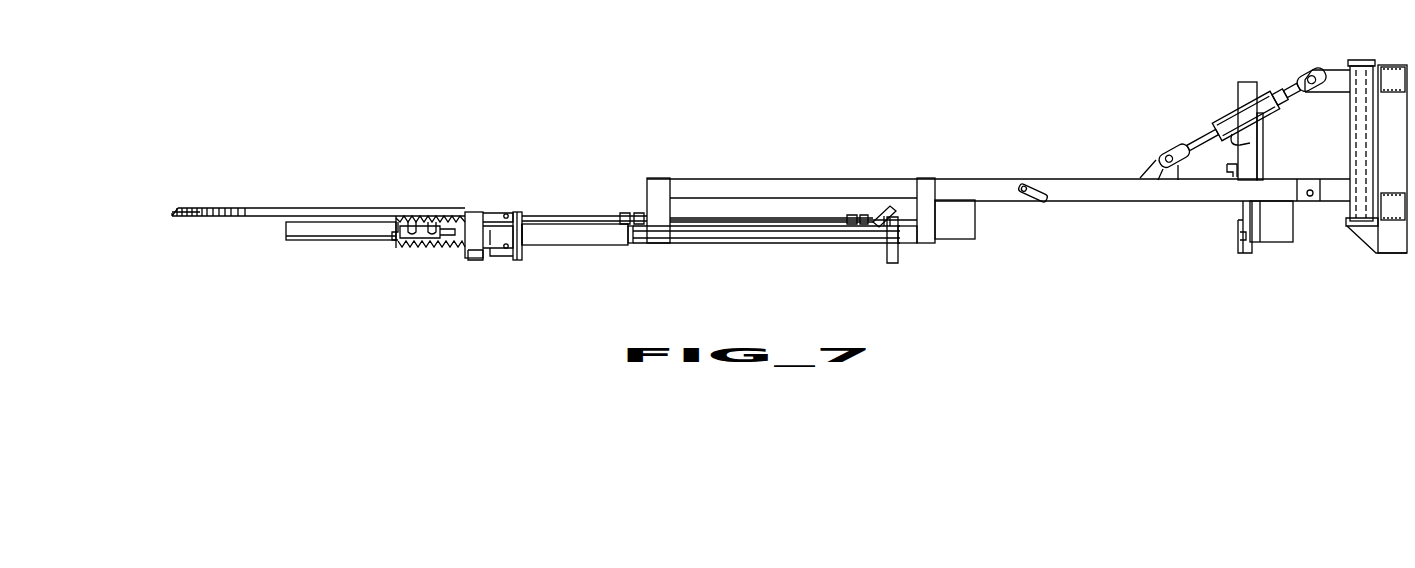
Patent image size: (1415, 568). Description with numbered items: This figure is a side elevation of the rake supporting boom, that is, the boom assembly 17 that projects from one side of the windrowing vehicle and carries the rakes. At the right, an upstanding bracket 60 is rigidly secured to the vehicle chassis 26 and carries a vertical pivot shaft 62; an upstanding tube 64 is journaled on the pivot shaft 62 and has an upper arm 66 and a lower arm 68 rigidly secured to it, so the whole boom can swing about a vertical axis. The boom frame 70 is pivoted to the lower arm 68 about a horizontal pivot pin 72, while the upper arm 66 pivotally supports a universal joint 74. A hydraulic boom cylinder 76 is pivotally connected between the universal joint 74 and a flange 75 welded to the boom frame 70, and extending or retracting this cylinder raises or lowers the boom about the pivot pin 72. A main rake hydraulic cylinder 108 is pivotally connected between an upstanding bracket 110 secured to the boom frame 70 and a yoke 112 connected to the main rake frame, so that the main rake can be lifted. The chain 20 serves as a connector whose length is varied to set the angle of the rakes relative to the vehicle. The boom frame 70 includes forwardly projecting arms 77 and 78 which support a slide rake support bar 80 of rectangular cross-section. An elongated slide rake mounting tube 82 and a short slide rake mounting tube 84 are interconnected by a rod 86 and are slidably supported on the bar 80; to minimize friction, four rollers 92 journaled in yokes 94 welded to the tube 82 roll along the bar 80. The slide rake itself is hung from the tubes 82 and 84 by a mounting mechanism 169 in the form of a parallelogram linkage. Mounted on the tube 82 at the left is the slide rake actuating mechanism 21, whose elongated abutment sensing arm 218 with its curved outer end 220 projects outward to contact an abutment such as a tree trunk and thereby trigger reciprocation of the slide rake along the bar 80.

The boom assembly 17 is at (738, 175).
The chain 20 is at (1032, 188).
The slide rake actuating mechanism 21 is at (247, 205).
The vehicle chassis 26 is at (1378, 236).
The upstanding bracket 60 is at (1388, 128).
The vertical pivot shaft 62 is at (1360, 60).
The upstanding tube 64 is at (1352, 108).
The upper arm 66 is at (1332, 74).
The lower arm 68 is at (1330, 202).
The boom frame 70 is at (778, 180).
The horizontal pivot pin 72 is at (1311, 188).
The universal joint 74 is at (1295, 75).
The flange 75 is at (1150, 162).
The hydraulic boom cylinder 76 is at (1235, 113).
The boom frame arm 77 is at (647, 190).
The boom frame arm 78 is at (925, 180).
The slide rake support bar 80 is at (290, 236).
The elongated slide rake mounting tube 82 is at (582, 246).
The short slide rake mounting tube 84 is at (900, 243).
The rod 86 is at (718, 236).
The rollers 92 is at (512, 214).
The yokes 94 is at (497, 212).
The main rake hydraulic cylinder 108 is at (1263, 158).
The upstanding bracket 110 is at (1245, 82).
The yoke 112 is at (1243, 248).
The mounting mechanism 169 is at (528, 228).
The abutment sensing arm 218 is at (212, 208).
The curved outer end 220 is at (405, 233).